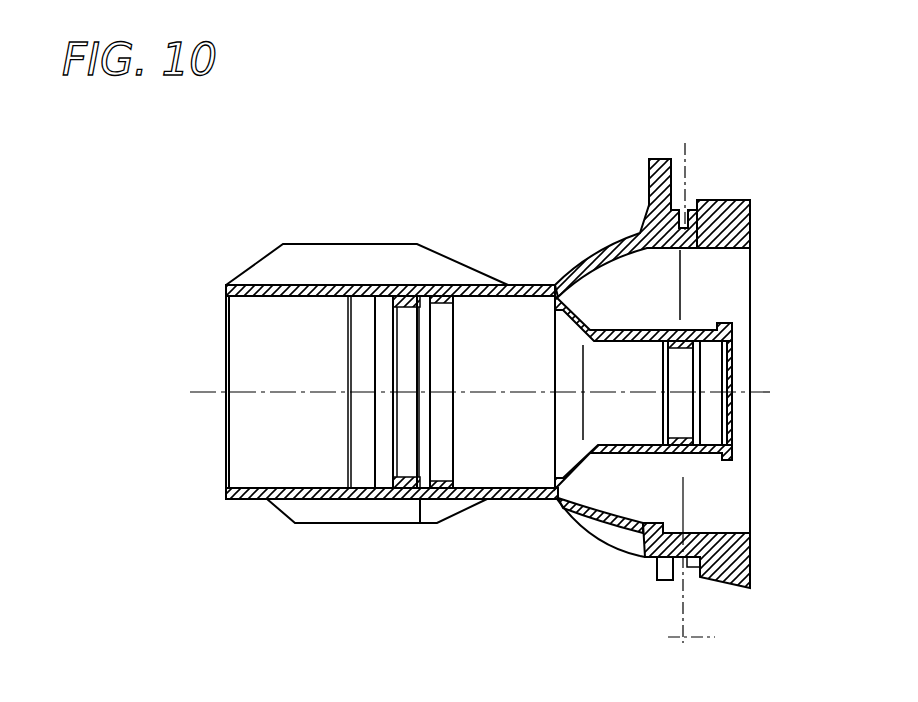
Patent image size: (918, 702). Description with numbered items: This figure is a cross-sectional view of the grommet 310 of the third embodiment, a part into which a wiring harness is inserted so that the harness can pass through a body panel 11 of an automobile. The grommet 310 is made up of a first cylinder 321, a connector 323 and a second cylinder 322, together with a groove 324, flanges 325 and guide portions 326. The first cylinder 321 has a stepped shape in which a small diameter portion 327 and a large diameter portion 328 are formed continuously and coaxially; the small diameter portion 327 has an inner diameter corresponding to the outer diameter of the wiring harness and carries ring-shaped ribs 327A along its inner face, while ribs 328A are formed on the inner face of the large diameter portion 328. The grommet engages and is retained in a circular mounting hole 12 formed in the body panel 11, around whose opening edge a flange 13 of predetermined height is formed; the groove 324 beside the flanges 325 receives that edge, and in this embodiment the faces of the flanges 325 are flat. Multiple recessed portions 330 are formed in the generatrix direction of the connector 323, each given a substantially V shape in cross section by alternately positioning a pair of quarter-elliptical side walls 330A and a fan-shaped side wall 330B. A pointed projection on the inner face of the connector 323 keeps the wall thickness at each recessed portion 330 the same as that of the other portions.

The grommet 310 is at (255, 212).
The first cylinder 321 is at (427, 240).
The second cylinder 322 is at (821, 172).
The connector 323 is at (573, 245).
The groove 324 is at (700, 202).
The flange 325 is at (648, 188).
The guide portion 326 is at (353, 262).
The small diameter portion 327 is at (657, 333).
The ring-shaped ribs 327A is at (722, 400).
The large diameter portion 328 is at (420, 502).
The ribs 328A is at (437, 430).
The recessed portion 330 is at (612, 548).
The side walls 330A is at (632, 545).
The side wall 330B is at (638, 557).
The body panel 11 is at (712, 141).
The mounting hole 12 is at (690, 250).
The flange 13 is at (700, 567).